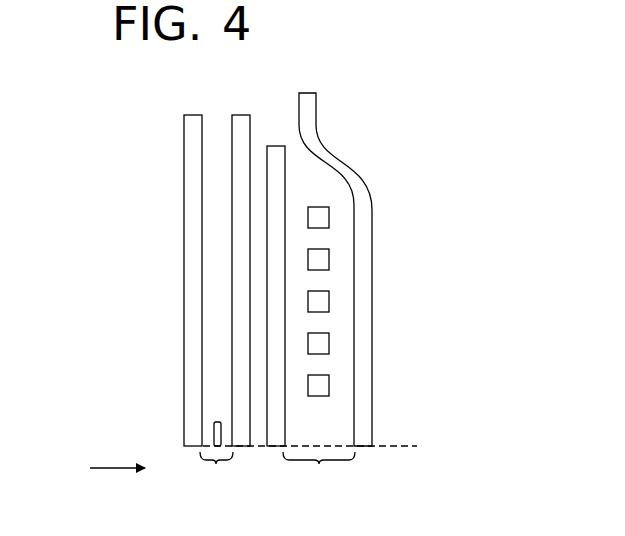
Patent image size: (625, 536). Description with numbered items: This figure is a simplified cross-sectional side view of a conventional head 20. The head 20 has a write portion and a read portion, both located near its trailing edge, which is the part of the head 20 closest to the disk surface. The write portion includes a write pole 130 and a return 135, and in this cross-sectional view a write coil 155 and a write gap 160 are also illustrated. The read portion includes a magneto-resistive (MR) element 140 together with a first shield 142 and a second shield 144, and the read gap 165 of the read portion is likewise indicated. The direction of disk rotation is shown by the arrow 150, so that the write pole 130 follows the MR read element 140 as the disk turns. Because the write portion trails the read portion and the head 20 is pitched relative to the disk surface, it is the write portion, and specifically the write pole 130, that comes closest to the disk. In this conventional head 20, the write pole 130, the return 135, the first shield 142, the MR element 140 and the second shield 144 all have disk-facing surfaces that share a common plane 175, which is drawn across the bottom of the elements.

The head 20 is at (402, 148).
The write pole 130 is at (371, 343).
The return 135 is at (277, 146).
The magneto-resistive (MR) element 140 is at (217, 422).
The first shield 142 is at (232, 335).
The second shield 144 is at (184, 292).
The arrow 150 is at (103, 468).
The write coil 155 is at (329, 217).
The write gap 160 is at (319, 472).
The read gap 165 is at (217, 472).
The common plane 175 is at (395, 445).